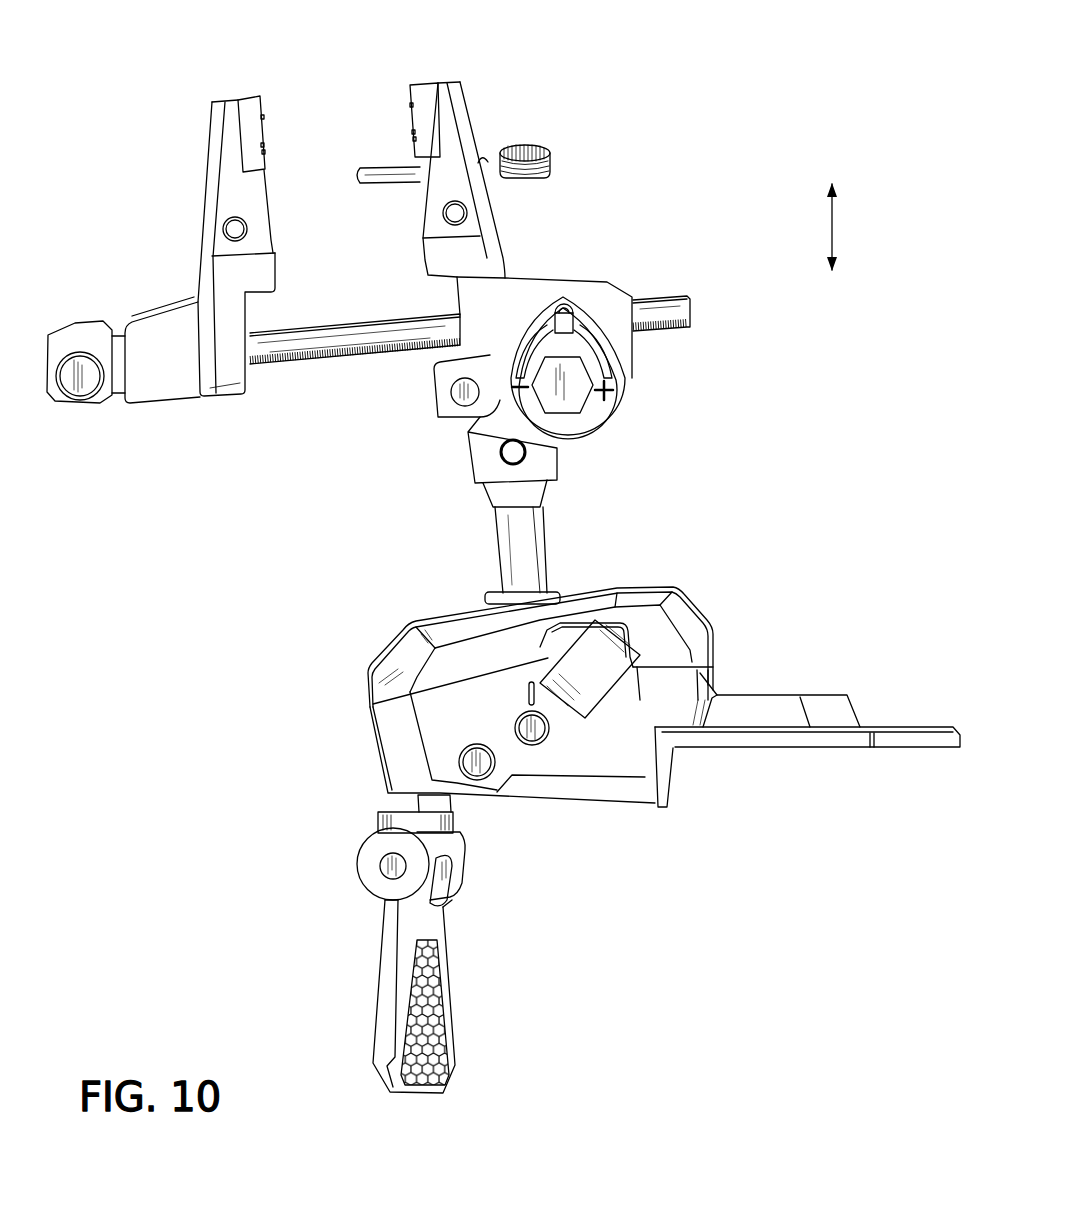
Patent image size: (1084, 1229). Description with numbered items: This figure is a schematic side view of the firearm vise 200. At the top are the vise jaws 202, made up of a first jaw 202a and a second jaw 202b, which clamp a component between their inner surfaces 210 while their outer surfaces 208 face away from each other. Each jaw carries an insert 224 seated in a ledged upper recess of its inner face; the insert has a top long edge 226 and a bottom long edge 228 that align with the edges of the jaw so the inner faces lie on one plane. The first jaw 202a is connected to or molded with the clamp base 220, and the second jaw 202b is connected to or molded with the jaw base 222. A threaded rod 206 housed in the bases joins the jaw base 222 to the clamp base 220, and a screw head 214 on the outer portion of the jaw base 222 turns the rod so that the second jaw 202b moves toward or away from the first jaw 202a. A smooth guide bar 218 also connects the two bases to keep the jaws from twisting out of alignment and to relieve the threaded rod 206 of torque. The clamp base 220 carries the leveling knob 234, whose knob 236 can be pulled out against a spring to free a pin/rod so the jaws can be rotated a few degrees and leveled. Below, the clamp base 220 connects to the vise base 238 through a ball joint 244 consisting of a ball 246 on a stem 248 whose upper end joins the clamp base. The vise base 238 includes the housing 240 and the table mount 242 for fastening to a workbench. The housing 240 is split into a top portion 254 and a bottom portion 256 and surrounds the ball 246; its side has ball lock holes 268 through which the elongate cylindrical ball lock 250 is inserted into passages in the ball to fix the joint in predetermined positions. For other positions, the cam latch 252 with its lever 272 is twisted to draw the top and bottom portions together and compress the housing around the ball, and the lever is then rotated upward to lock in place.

The firearm vise 200 is at (752, 76).
The vise jaws 202 is at (196, 164).
The first jaw 202a is at (466, 100).
The second jaw 202b is at (209, 112).
The threaded rod 206 is at (312, 363).
The outer surface 208 is at (199, 240).
The inner surface 210 is at (270, 190).
The screw head 214 is at (45, 383).
The guide bar 218 is at (308, 332).
The clamp base 220 is at (512, 279).
The jaw base 222 is at (168, 328).
The insert 224 is at (241, 89).
The top long edge 226 is at (251, 97).
The bottom long edge 228 is at (430, 157).
The leveling knob 234 is at (636, 400).
The knob 236 is at (593, 417).
The vise base 238 is at (703, 597).
The housing 240 is at (384, 712).
The table mount 242 is at (913, 725).
The ball joint 244 is at (566, 581).
The ball 246 is at (488, 603).
The stem 248 is at (510, 532).
The ball lock 250 is at (607, 690).
The cam latch 252 is at (371, 1001).
The top portion 254 is at (428, 634).
The bottom portion 256 is at (418, 812).
The ball lock holes 268 is at (481, 768).
The lever 272 is at (440, 1018).